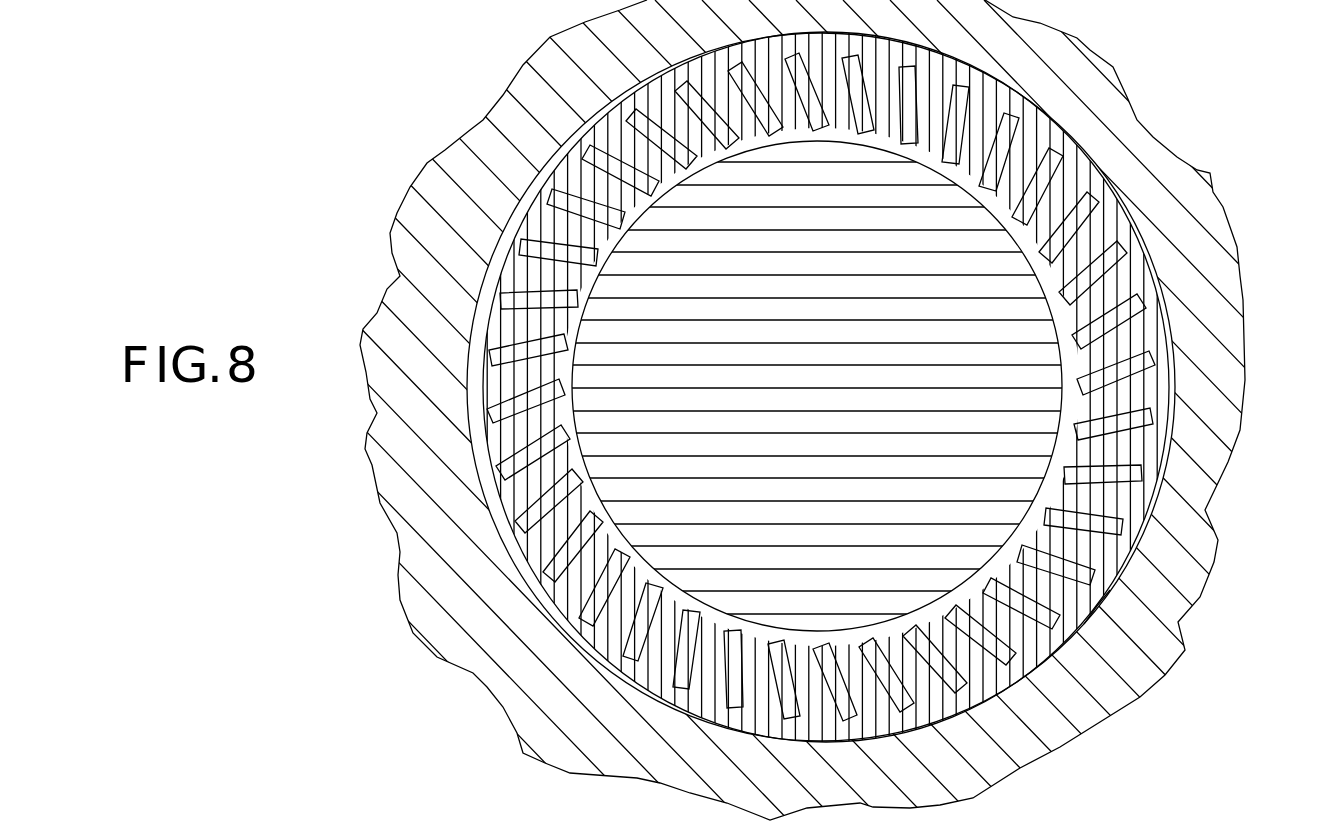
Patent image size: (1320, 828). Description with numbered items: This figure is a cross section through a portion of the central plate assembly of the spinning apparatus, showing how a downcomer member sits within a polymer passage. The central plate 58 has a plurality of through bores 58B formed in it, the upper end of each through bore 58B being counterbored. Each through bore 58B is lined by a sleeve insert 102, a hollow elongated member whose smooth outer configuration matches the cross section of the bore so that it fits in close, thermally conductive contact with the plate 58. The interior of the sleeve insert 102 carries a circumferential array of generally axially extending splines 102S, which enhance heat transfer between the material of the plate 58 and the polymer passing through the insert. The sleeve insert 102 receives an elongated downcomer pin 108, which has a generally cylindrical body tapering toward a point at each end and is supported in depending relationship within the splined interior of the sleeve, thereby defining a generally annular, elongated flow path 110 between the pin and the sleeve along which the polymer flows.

The central plate 58 is at (1205, 470).
The through bore 58B is at (1112, 576).
The sleeve insert 102 is at (495, 501).
The splines 102S is at (562, 534).
The downcomer pin 108 is at (737, 333).
The annular flow path 110 is at (1118, 653).